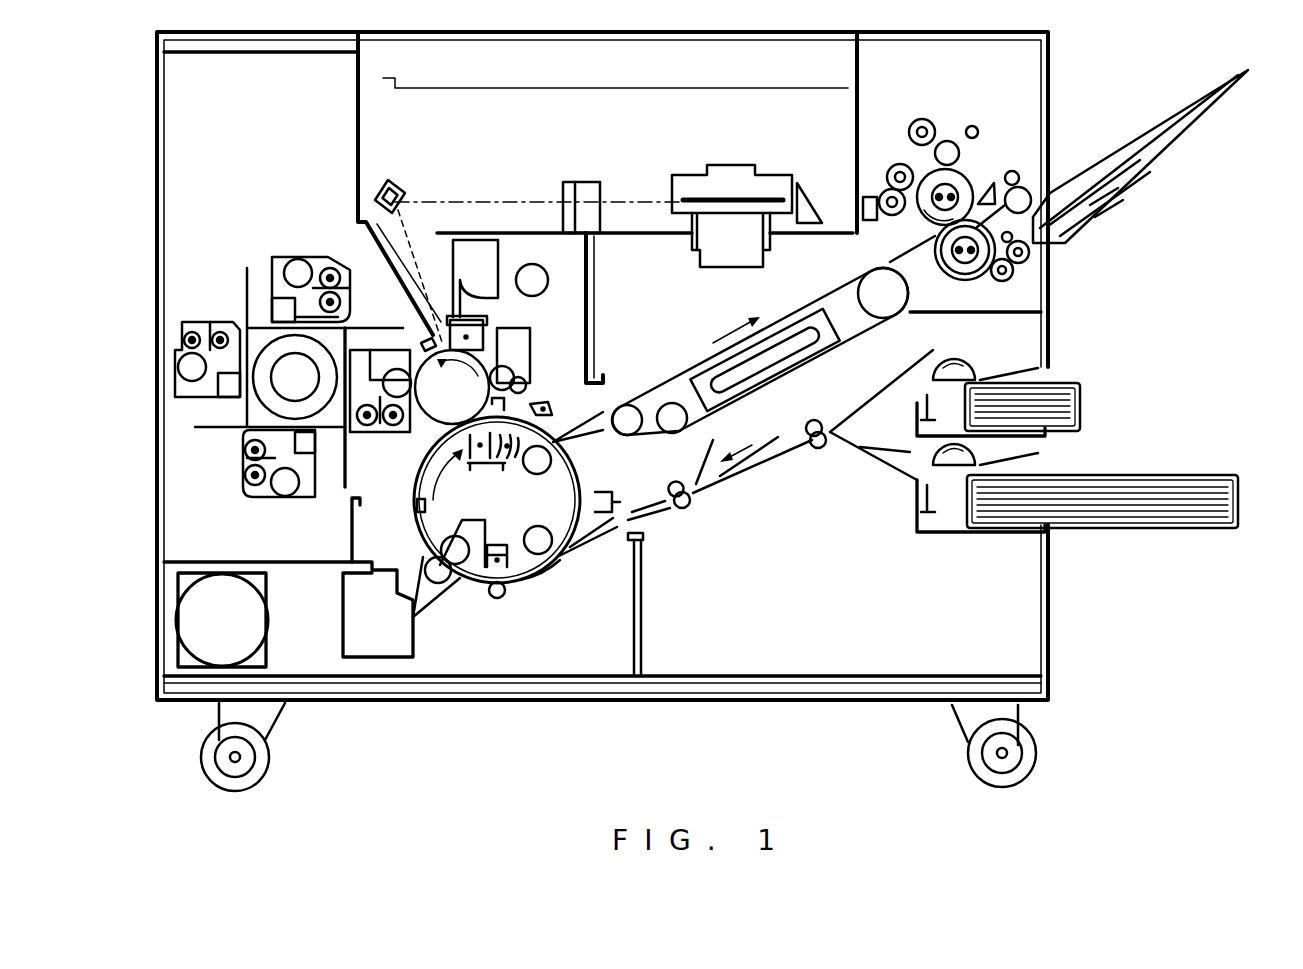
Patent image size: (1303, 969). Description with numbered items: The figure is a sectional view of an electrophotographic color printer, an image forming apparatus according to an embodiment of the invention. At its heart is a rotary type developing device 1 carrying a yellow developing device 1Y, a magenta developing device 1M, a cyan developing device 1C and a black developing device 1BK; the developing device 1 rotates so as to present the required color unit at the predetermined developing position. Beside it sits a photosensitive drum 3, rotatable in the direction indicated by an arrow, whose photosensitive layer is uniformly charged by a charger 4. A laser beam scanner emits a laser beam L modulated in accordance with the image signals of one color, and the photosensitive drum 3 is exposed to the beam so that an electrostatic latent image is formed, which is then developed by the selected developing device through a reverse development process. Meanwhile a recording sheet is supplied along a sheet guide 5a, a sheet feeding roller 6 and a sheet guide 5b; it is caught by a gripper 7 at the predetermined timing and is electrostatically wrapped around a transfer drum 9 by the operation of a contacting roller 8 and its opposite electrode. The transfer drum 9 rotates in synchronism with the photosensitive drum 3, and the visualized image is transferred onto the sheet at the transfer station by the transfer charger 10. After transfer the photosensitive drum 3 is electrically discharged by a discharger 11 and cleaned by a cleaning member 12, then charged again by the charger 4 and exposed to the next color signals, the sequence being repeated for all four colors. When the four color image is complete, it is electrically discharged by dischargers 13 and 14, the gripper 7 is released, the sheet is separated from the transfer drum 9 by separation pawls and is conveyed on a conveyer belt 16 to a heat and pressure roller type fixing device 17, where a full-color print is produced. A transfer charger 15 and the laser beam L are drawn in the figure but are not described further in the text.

The developing device 1 is at (170, 432).
The yellow developing device 1Y is at (176, 386).
The magenta developing device 1M is at (375, 433).
The cyan developing device 1C is at (247, 488).
The black developing device 1BK is at (350, 284).
The laser beam L is at (424, 262).
The photosensitive drum 3 is at (434, 420).
The charger 4 is at (488, 331).
The sheet guide 5a is at (724, 476).
The sheet guide 5b is at (589, 550).
The sheet feeding roller 6 is at (690, 506).
The gripper 7 is at (416, 507).
The contacting roller 8 is at (496, 597).
The transfer drum 9 is at (539, 582).
The transfer charger 10 is at (483, 467).
The discharger 13 is at (522, 467).
The discharger 11 is at (524, 397).
The cleaning member 12 is at (520, 348).
The discharger 14 is at (546, 410).
The transfer charger 15 is at (604, 412).
The conveyer belt 16 is at (800, 311).
The fixing device 17 is at (982, 163).